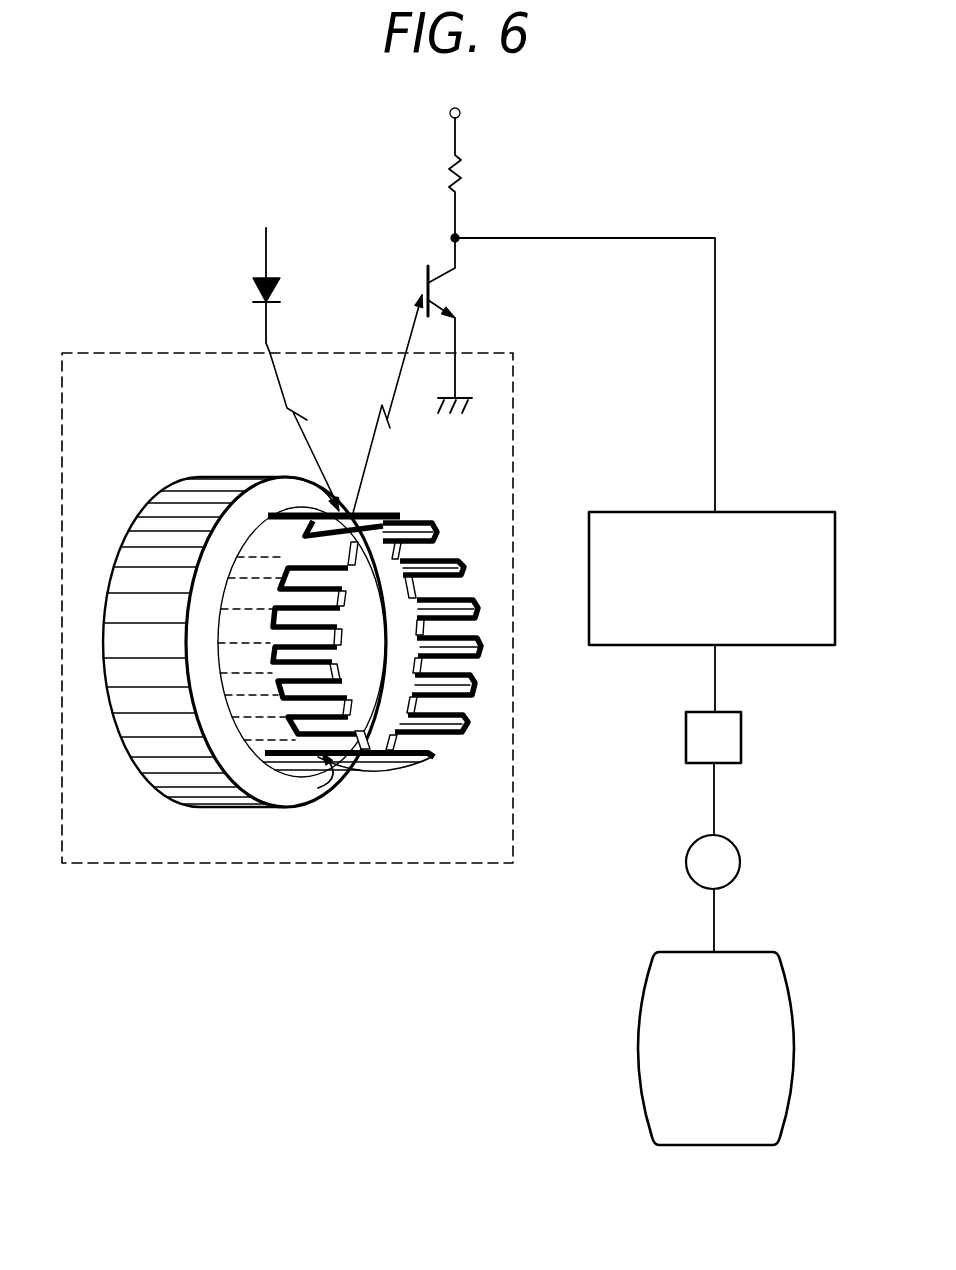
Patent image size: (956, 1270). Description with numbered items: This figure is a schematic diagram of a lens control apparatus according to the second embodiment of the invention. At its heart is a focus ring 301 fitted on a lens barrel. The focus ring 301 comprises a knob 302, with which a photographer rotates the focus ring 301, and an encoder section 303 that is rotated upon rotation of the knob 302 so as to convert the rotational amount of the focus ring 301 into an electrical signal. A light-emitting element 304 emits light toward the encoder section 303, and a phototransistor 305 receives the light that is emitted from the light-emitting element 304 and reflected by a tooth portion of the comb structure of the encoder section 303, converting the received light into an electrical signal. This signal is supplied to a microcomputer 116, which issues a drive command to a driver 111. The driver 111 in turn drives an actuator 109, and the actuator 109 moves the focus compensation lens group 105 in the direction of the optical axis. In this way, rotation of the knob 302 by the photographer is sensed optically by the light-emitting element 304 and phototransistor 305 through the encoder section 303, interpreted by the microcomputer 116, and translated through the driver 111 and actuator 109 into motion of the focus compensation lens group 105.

The focus compensation lens group 105 is at (642, 988).
The actuator 109 is at (741, 860).
The driver 111 is at (742, 752).
The microcomputer 116 is at (799, 512).
The focus ring 301 is at (85, 865).
The knob 302 is at (145, 765).
The encoder section 303 is at (474, 688).
The light-emitting element 304 is at (281, 282).
The phototransistor 305 is at (456, 275).